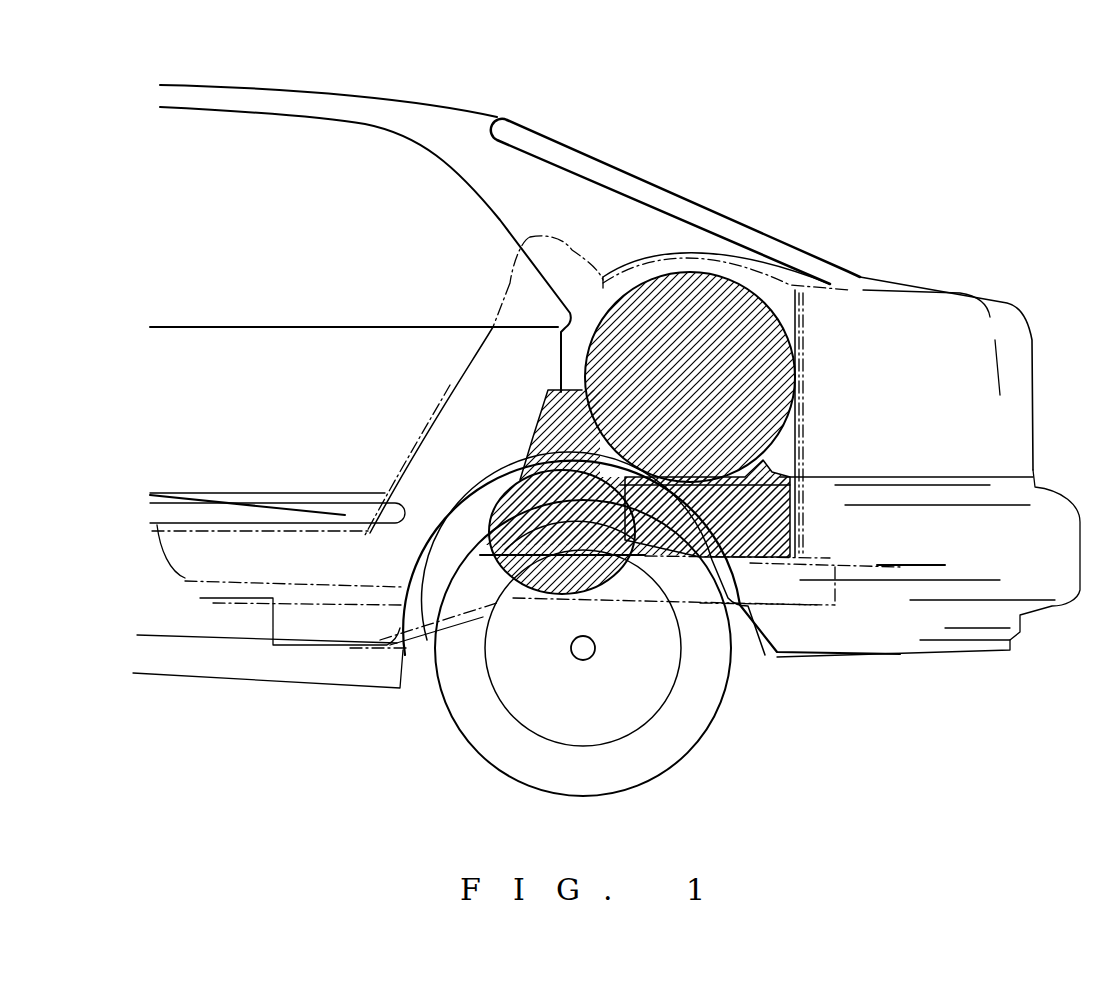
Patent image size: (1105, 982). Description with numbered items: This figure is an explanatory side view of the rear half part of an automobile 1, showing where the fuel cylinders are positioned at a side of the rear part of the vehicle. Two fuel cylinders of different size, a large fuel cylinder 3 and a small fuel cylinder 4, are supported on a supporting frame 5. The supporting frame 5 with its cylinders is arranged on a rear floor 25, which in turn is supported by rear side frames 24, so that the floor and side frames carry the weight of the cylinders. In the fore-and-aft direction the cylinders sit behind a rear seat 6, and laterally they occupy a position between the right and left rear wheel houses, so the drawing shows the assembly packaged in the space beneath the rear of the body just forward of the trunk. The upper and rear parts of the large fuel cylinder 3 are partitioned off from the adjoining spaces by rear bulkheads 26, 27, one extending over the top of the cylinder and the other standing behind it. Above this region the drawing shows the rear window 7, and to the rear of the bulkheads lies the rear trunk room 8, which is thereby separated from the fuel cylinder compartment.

The automobile 1 is at (318, 84).
The large fuel cylinder 3 is at (775, 312).
The small fuel cylinder 4 is at (520, 600).
The supporting frame 5 is at (785, 467).
The rear seat 6 is at (455, 379).
The rear window 7 is at (682, 188).
The rear trunk room 8 is at (925, 416).
The rear side frame 24 is at (740, 603).
The rear floor 25 is at (878, 565).
The rear bulkhead 26 is at (688, 257).
The rear bulkhead 27 is at (805, 363).